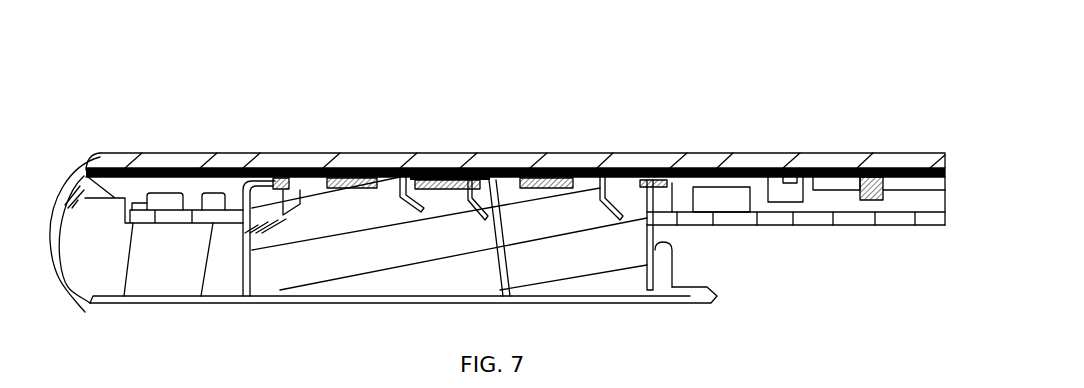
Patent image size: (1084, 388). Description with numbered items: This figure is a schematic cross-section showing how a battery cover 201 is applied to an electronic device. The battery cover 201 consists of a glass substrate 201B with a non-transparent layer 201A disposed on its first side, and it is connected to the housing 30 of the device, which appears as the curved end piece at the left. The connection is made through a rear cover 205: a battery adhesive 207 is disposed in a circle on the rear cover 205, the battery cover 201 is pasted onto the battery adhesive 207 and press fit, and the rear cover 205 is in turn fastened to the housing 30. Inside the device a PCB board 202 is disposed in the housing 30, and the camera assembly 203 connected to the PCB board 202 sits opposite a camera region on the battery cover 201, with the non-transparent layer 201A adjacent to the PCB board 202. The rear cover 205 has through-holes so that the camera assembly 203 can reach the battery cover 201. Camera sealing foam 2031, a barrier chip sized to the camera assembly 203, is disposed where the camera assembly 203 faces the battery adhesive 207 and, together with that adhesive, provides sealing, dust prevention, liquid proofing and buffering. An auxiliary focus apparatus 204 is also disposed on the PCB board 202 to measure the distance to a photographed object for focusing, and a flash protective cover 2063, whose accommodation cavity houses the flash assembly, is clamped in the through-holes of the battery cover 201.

The battery cover 201 is at (188, 84).
The non-transparent layer 201A is at (205, 203).
The glass substrate 201B is at (120, 168).
The housing 30 is at (57, 222).
The battery adhesive 207 is at (235, 190).
The rear cover 205 is at (245, 174).
The camera assembly 203 is at (358, 212).
The camera sealing foam 2031 is at (438, 183).
The auxiliary focus apparatus 204 is at (710, 198).
The flash protective cover 2063 is at (828, 182).
The PCB board 202 is at (930, 220).